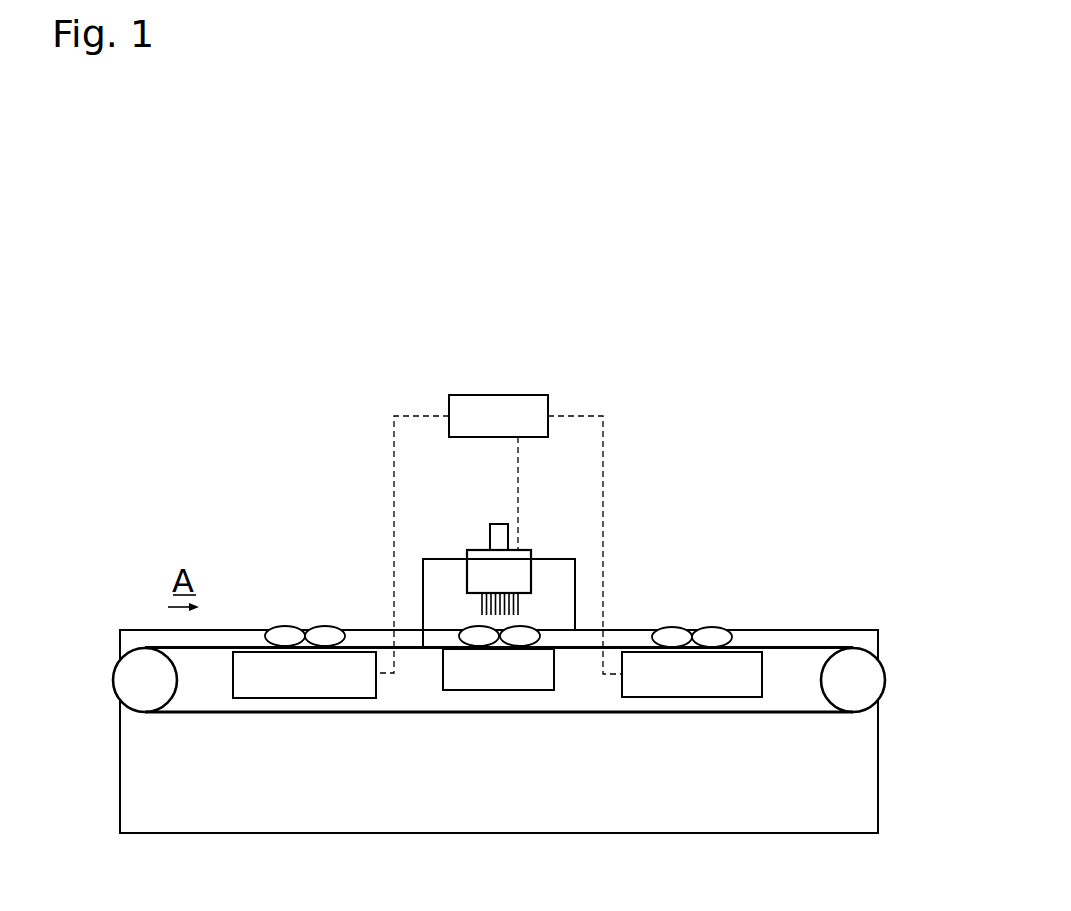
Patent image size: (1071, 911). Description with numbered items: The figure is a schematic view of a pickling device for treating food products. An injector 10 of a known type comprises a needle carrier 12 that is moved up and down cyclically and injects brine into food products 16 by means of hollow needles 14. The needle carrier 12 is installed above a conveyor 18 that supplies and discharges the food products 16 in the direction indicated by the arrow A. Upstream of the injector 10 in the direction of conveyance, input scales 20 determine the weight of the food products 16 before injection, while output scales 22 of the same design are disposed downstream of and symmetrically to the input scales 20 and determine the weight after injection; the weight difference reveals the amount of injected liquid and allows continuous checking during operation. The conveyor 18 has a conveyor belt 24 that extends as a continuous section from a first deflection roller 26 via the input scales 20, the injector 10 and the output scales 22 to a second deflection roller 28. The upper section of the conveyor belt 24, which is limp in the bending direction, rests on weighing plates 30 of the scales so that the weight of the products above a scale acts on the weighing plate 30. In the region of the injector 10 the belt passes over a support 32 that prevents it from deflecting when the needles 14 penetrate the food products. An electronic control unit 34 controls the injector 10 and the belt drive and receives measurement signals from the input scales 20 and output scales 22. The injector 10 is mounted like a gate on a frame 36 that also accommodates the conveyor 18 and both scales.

The injector 10 is at (588, 586).
The needle carrier 12 is at (485, 573).
The hollow needles 14 is at (478, 605).
The food products 16 is at (283, 630).
The conveyor 18 is at (793, 640).
The input scales 20 is at (292, 685).
The output scales 22 is at (702, 687).
The conveyor belt 24 is at (423, 648).
The first deflection roller 26 is at (152, 690).
The second deflection roller 28 is at (850, 688).
The weighing plates 30 is at (350, 652).
The support 32 is at (516, 670).
The electronic control unit 34 is at (500, 407).
The frame 36 is at (560, 802).